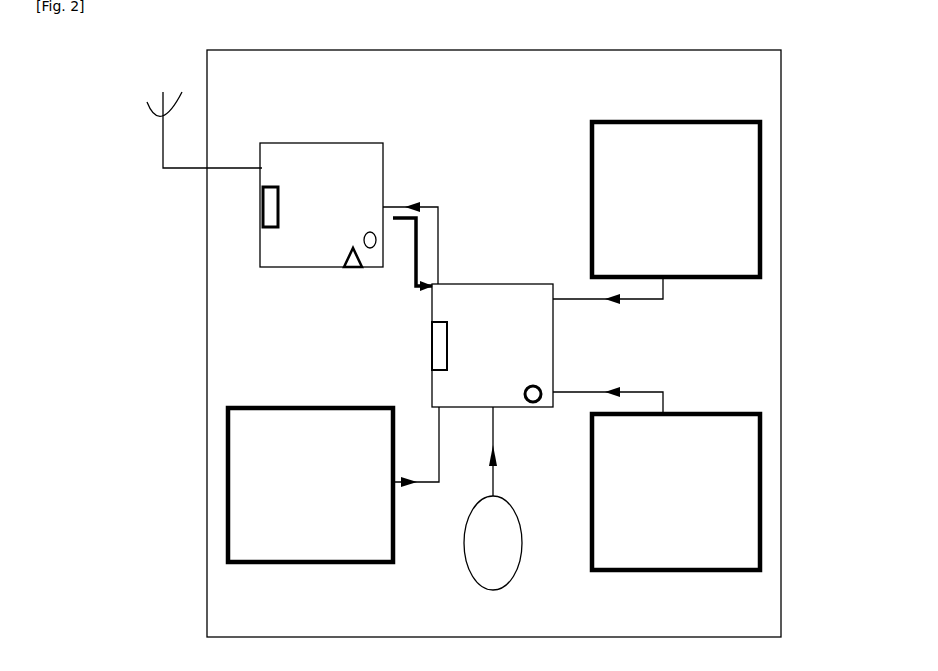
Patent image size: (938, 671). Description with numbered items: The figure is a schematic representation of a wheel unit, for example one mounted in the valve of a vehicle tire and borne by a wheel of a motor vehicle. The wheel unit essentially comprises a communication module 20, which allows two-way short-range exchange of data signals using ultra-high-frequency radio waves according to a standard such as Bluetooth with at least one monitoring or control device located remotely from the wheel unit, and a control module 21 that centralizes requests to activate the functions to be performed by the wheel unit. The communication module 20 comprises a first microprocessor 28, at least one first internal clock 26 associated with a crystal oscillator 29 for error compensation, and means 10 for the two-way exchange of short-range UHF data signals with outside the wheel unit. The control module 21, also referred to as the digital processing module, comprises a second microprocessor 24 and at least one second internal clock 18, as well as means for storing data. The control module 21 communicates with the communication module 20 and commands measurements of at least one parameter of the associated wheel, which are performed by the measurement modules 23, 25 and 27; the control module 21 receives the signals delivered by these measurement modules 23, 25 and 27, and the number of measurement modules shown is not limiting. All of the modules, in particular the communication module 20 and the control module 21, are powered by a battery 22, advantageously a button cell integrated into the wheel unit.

The means for two-way exchange of short-range data signals 10 is at (150, 107).
The second internal clock 18 is at (600, 391).
The communication module 20 is at (310, 212).
The control module 21 is at (505, 323).
The battery 22 is at (513, 580).
The measurement module 23 is at (700, 202).
The second microprocessor 24 is at (433, 343).
The measurement module 25 is at (665, 490).
The first internal clock 26 is at (378, 272).
The measurement module 27 is at (323, 477).
The first microprocessor 28 is at (263, 207).
The crystal oscillator 29 is at (344, 267).